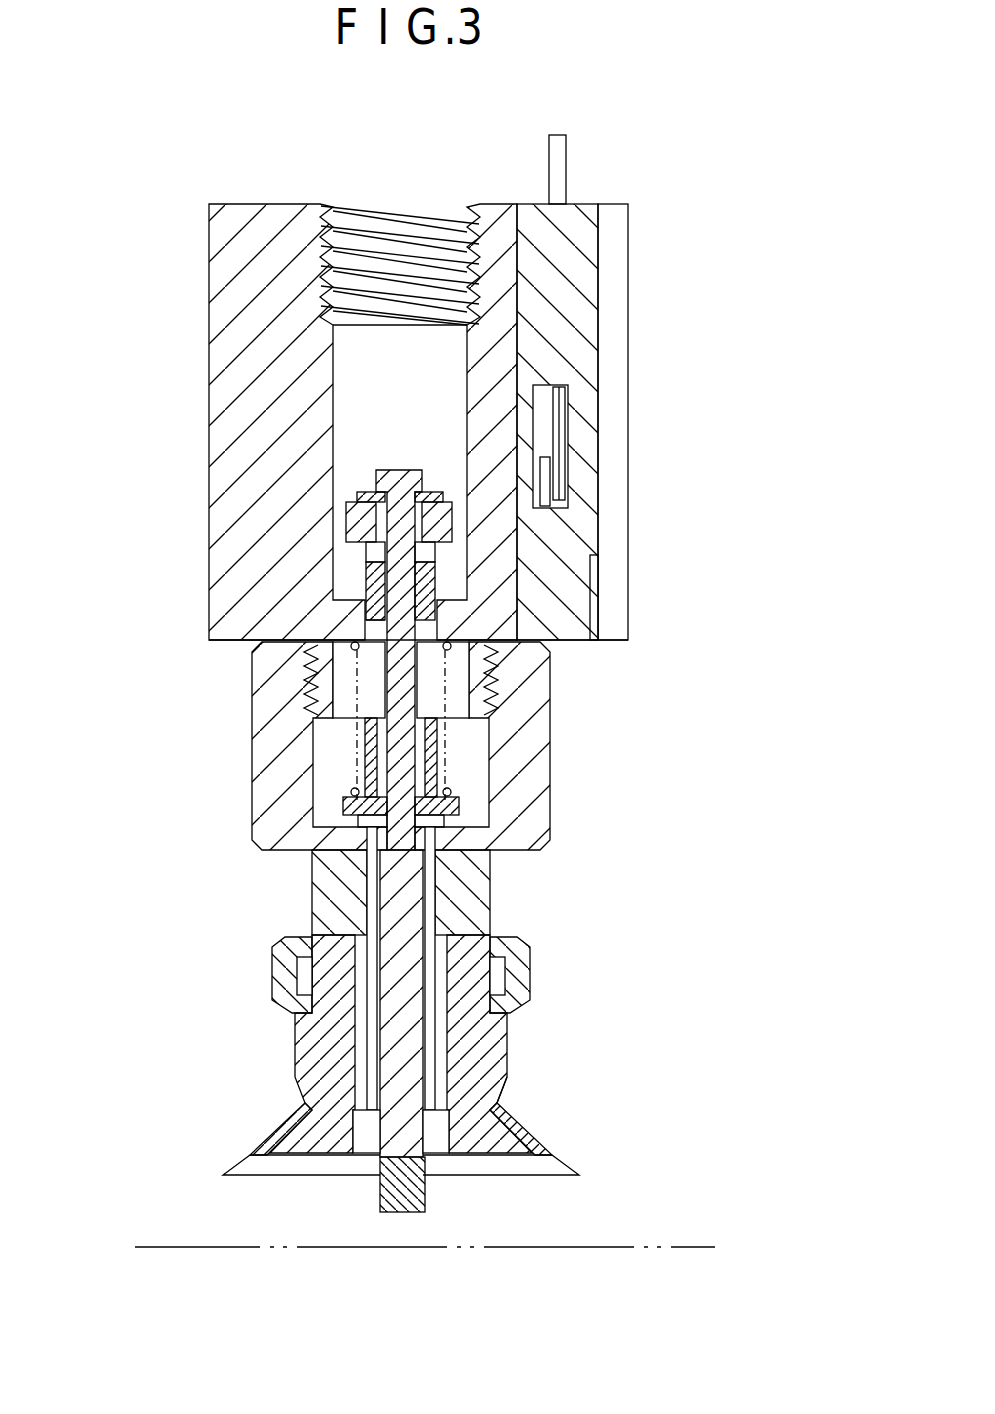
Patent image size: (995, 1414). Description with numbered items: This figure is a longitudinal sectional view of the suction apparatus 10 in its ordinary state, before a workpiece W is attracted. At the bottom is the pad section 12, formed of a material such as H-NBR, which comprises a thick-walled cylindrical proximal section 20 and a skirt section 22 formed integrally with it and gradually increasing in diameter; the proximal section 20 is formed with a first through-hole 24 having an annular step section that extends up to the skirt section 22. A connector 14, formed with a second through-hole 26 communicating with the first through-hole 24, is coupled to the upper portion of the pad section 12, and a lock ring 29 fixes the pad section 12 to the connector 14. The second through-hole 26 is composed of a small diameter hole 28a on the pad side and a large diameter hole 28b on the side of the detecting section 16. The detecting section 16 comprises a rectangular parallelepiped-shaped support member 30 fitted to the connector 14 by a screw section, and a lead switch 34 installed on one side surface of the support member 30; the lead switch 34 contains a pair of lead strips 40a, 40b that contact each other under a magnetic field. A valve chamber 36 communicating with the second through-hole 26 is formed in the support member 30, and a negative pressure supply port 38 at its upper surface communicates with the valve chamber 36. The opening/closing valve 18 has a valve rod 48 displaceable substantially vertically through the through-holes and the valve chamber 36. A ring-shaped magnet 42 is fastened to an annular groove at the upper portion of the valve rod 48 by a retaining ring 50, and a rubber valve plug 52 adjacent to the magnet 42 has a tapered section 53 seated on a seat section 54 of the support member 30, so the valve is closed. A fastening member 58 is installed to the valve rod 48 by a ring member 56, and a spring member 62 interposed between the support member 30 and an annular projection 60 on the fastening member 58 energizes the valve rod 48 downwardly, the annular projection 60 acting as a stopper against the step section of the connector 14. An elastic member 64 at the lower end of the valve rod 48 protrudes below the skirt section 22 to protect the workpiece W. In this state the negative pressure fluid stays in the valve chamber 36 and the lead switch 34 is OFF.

The suction apparatus 10 is at (705, 97).
The pad section 12 is at (513, 1042).
The connector 14 is at (552, 763).
The detecting section 16 is at (628, 342).
The opening/closing valve 18 is at (447, 575).
The proximal section 20 is at (312, 1050).
The skirt section 22 is at (237, 1170).
The first through-hole 24 is at (445, 1135).
The second through-hole 26 is at (440, 868).
The small diameter hole 28a is at (373, 902).
The large diameter hole 28b is at (320, 758).
The lock ring 29 is at (530, 975).
The support member 30 is at (262, 398).
The lead switch 34 is at (577, 263).
The valve chamber 36 is at (422, 412).
The negative pressure supply port 38 is at (457, 243).
The lead strip 40a is at (555, 442).
The lead strip 40b is at (548, 474).
The magnet 42 is at (357, 525).
The valve rod 48 is at (410, 912).
The retaining ring 50 is at (357, 498).
The valve plug 52 is at (433, 600).
The tapered section 53 is at (393, 640).
The seat section 54 is at (357, 610).
The ring member 56 is at (463, 822).
The fastening member 58 is at (437, 735).
The annular projection 60 is at (343, 812).
The spring member 62 is at (445, 648).
The elastic member 64 is at (403, 1212).
The workpiece W is at (684, 1242).